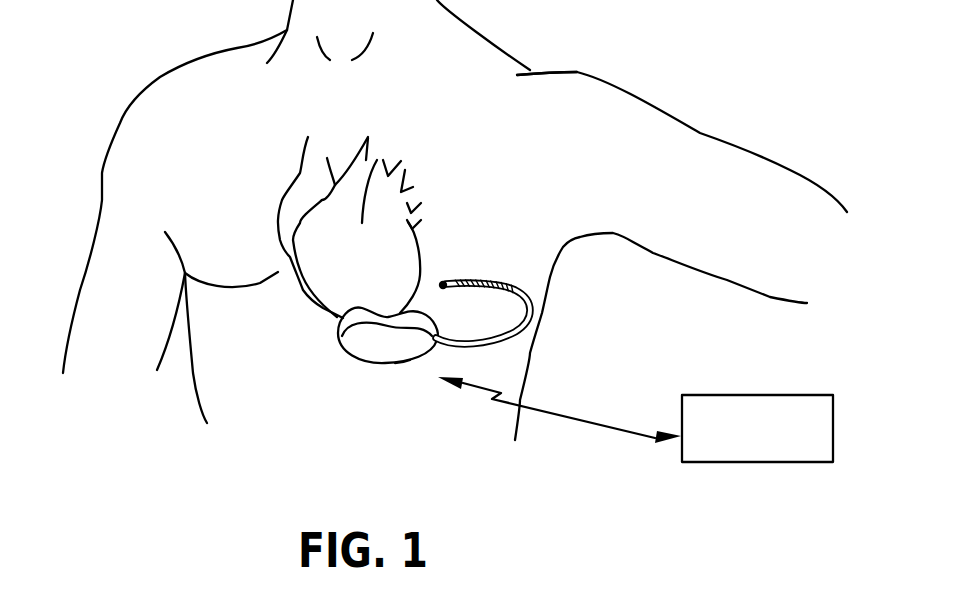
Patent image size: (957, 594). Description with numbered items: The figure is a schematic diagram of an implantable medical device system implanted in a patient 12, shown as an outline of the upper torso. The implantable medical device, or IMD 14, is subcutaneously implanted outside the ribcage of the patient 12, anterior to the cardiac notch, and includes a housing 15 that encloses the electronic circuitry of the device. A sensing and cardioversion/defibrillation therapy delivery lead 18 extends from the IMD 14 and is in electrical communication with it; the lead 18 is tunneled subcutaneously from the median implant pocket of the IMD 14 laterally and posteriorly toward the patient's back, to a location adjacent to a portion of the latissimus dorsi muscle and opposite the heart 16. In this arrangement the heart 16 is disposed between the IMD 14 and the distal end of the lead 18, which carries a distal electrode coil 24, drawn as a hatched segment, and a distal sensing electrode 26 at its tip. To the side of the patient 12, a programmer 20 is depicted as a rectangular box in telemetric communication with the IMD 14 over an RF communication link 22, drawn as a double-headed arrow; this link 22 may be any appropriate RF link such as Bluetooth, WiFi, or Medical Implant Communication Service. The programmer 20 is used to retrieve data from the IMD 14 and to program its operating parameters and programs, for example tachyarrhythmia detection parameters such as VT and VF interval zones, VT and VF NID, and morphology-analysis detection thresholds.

The patient 12 is at (578, 72).
The implantable medical device 14 is at (345, 342).
The housing 15 is at (402, 362).
The heart 16 is at (377, 160).
The sensing and cardioversion/defibrillation therapy delivery lead 18 is at (500, 343).
The programmer 20 is at (742, 463).
The RF communication link 22 is at (587, 420).
The distal electrode coil 24 is at (512, 290).
The distal sensing electrode 26 is at (442, 280).